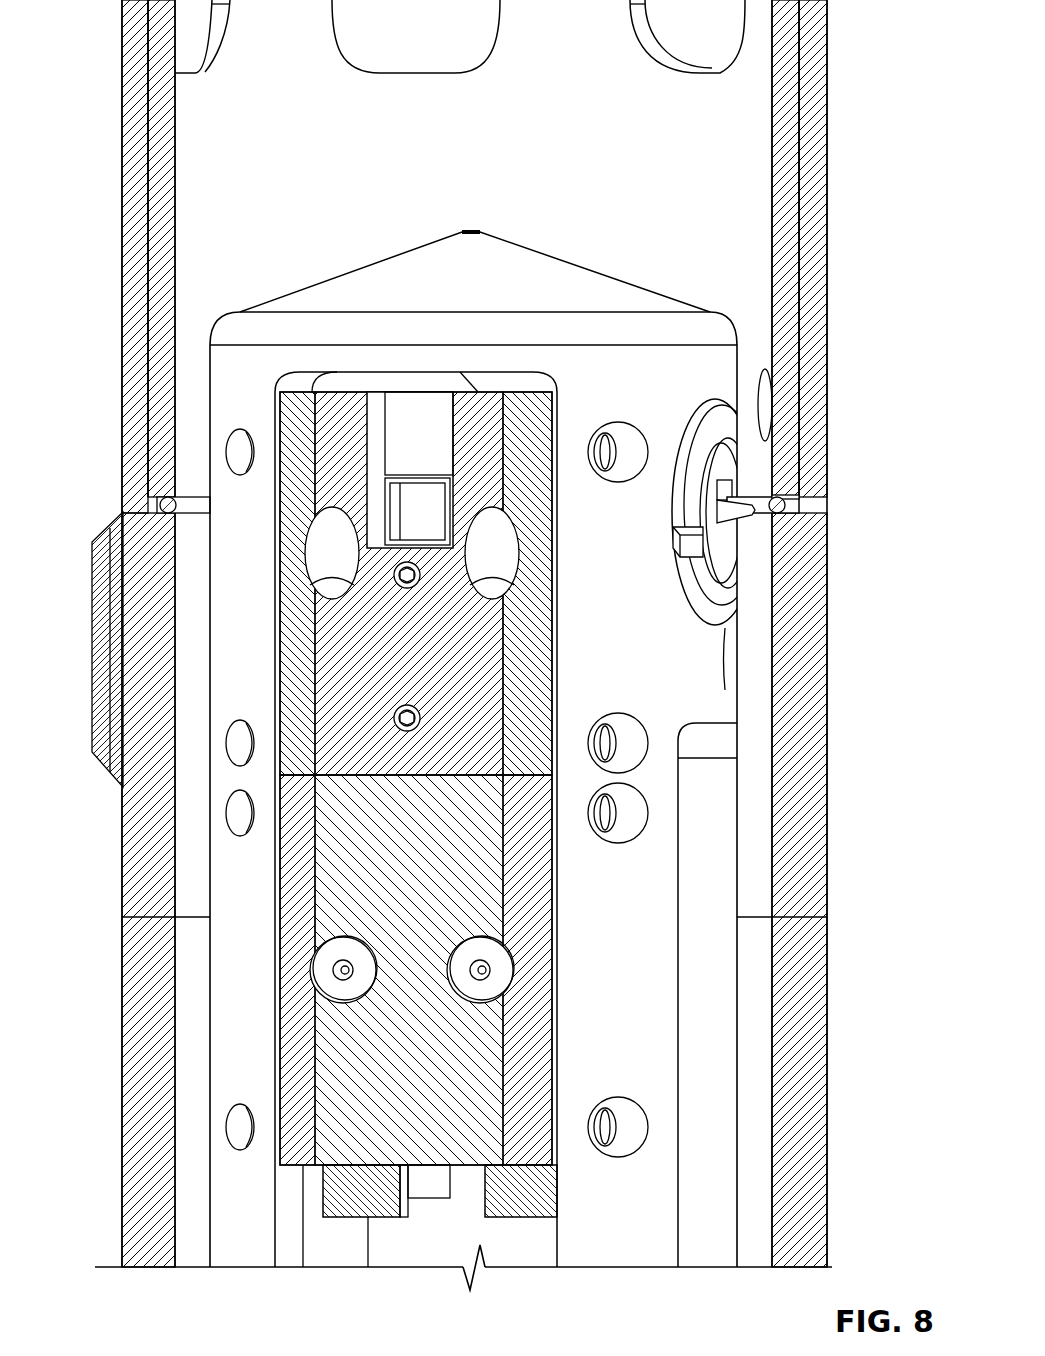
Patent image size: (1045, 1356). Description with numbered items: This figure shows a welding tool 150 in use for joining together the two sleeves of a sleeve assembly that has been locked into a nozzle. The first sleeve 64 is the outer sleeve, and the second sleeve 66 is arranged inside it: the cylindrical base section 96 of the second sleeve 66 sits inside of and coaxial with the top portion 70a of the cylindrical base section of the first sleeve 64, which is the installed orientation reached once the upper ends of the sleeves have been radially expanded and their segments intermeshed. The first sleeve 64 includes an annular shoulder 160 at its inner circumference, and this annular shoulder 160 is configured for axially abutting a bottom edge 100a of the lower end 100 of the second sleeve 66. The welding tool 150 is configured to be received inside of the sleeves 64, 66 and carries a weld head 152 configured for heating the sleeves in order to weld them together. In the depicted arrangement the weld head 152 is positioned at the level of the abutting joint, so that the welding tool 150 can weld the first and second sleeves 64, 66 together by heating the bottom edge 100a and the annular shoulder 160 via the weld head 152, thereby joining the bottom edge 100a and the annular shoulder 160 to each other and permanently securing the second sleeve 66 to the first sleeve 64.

The first sleeve 64 is at (798, 608).
The second sleeve 66 is at (787, 355).
The top portion of cylindrical base section 70a is at (118, 310).
The cylindrical base section 96 is at (144, 373).
The lower end 100 is at (818, 522).
The bottom edge 100a is at (790, 517).
The welding tool 150 is at (580, 234).
The weld head 152 is at (716, 552).
The annular shoulder 160 is at (780, 522).